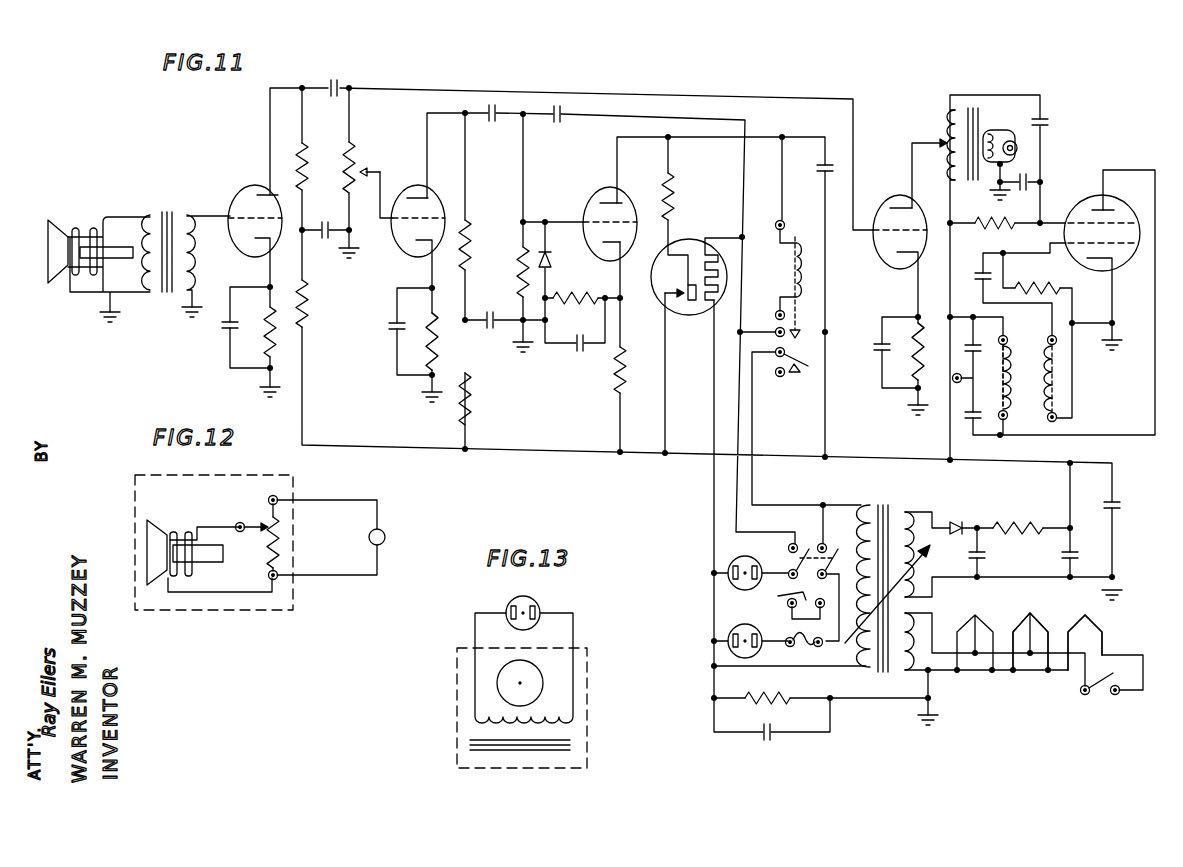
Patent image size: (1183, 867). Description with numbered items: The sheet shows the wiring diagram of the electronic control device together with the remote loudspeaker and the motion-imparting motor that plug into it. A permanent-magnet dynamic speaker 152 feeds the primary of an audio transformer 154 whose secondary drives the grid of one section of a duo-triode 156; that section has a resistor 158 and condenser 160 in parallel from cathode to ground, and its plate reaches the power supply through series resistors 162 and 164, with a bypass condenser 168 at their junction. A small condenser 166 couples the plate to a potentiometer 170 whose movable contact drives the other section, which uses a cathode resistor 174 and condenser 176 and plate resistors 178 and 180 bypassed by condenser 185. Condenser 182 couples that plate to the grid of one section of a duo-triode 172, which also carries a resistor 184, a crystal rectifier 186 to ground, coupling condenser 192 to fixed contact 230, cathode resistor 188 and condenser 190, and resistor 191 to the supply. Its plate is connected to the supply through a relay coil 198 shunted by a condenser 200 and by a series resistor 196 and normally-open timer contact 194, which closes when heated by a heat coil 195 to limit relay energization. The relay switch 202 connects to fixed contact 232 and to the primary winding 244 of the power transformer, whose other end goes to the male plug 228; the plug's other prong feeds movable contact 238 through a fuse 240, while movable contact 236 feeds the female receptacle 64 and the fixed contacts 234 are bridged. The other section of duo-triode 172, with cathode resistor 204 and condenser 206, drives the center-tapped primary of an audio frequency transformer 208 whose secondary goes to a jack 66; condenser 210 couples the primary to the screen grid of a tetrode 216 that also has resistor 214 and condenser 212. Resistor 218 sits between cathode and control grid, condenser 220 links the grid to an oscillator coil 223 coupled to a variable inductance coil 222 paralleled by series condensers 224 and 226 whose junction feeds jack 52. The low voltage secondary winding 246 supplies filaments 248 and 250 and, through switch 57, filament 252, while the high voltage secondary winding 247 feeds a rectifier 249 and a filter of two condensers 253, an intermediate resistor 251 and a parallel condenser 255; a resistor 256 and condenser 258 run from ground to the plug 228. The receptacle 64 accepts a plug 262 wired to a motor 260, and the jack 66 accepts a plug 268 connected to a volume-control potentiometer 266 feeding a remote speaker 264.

In FIG. 11, the permanent-magnet dynamic speaker 152 is at (88, 228).
In FIG. 11, the audio transformer 154 is at (165, 298).
In FIG. 11, the duo-triode 156 is at (428, 185).
In FIG. 11, the resistor 158 is at (260, 318).
In FIG. 11, the condenser 160 is at (225, 328).
In FIG. 11, the resistor 162 is at (298, 143).
In FIG. 11, the resistor 164 is at (306, 322).
In FIG. 11, the condenser 166 is at (336, 82).
In FIG. 11, the bypass condenser 168 is at (322, 226).
In FIG. 11, the potentiometer 170 is at (354, 165).
In FIG. 11, the duo-triode 172 is at (884, 203).
In FIG. 11, the resistor 174 is at (428, 350).
In FIG. 11, the condenser 176 is at (395, 335).
In FIG. 11, the resistor 178 is at (467, 222).
In FIG. 11, the resistor 180 is at (468, 410).
In FIG. 11, the condenser 182 is at (493, 108).
In FIG. 11, the resistor 184 is at (520, 270).
In FIG. 11, the bypass condenser 185 is at (488, 326).
In FIG. 11, the crystal rectifier 186 is at (551, 260).
In FIG. 11, the resistor 188 is at (568, 302).
In FIG. 11, the condenser 190 is at (578, 348).
In FIG. 11, the resistor 191 is at (615, 385).
In FIG. 11, the condenser 192 is at (558, 120).
In FIG. 11, the timer contact 194 is at (692, 300).
In FIG. 11, the heat coil 195 is at (718, 245).
In FIG. 11, the resistor 196 is at (673, 195).
In FIG. 11, the relay coil 198 is at (790, 283).
In FIG. 11, the condenser 200 is at (820, 170).
In FIG. 11, the relay switch 202 is at (810, 360).
In FIG. 11, the resistor 204 is at (912, 385).
In FIG. 11, the condenser 206 is at (880, 360).
In FIG. 11, the audio frequency transformer 208 is at (984, 135).
In FIG. 11, the jack 66 is at (1020, 148).
In FIG. 11, the condenser 210 is at (1050, 118).
In FIG. 11, the condenser 212 is at (1030, 180).
In FIG. 11, the resistor 214 is at (982, 222).
In FIG. 11, the tetrode 216 is at (1130, 206).
In FIG. 11, the resistor 218 is at (1028, 290).
In FIG. 11, the condenser 220 is at (978, 272).
In FIG. 11, the variable inductance coil 222 is at (1012, 420).
In FIG. 11, the oscillator coil 223 is at (1040, 395).
In FIG. 11, the condenser 224 is at (1007, 339).
In FIG. 11, the condenser 226 is at (973, 424).
In FIG. 11, the jack 52 is at (957, 384).
In FIG. 11, the primary winding 244 is at (867, 508).
In FIG. 11, the low voltage secondary winding 246 is at (906, 672).
In FIG. 11, the high voltage secondary winding 247 is at (927, 520).
In FIG. 11, the rectifier 249 is at (985, 527).
In FIG. 11, the resistor 251 is at (1025, 528).
In FIG. 11, the condensers 253 is at (1062, 556).
In FIG. 11, the condenser 255 is at (1120, 505).
In FIG. 11, the filament 248 is at (979, 618).
In FIG. 11, the filament 250 is at (1036, 618).
In FIG. 11, the filament 252 is at (1103, 622).
In FIG. 11, the single pole, single throw switch 57 is at (1087, 695).
In FIG. 11, the resistor 256 is at (797, 698).
In FIG. 11, the condenser 258 is at (773, 740).
In FIG. 11, the female receptacle 64 is at (728, 563).
In FIG. 11, the male plug 228 is at (728, 646).
In FIG. 11, the fixed contact 230 is at (788, 545).
In FIG. 11, the fixed contact 232 is at (817, 536).
In FIG. 11, the fixed contacts 234 is at (783, 608).
In FIG. 11, the movable contact 236 is at (798, 560).
In FIG. 11, the movable contact 238 is at (838, 566).
In FIG. 11, the fuse 240 is at (810, 652).
In FIG. 12, the permanent-magnet dynamic speaker 264 is at (230, 592).
In FIG. 12, the potentiometer 266 is at (290, 568).
In FIG. 12, the plug 268 is at (385, 535).
In FIG. 13, the plug 262 is at (540, 608).
In FIG. 13, the motor 260 is at (543, 686).